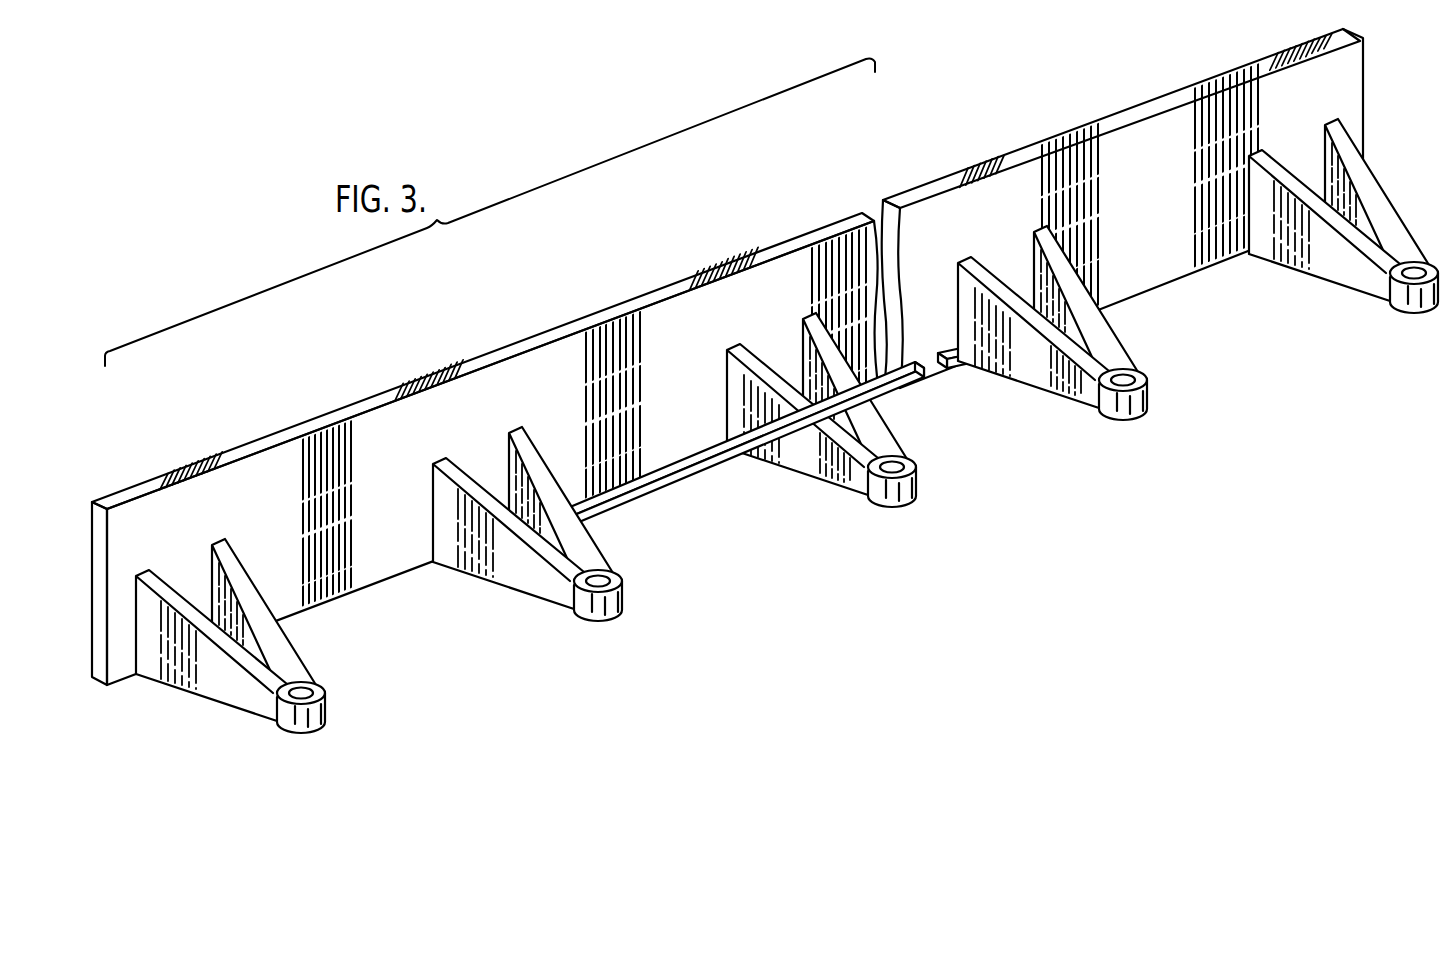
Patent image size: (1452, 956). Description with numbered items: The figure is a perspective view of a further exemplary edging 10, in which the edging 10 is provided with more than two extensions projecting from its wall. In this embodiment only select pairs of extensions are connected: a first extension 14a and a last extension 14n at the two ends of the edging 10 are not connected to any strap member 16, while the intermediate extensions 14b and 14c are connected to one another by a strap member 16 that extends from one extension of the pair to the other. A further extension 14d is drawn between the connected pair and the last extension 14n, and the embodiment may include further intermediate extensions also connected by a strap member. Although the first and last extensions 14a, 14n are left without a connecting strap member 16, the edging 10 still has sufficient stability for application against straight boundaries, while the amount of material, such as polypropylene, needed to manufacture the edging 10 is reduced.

The edging 10 is at (1053, 500).
The first extension 14a is at (235, 695).
The intermediate extension 14b is at (513, 578).
The intermediate extension 14c is at (903, 443).
The bracket 14d is at (1052, 323).
The last extension 14n is at (1327, 272).
The strap member 16 is at (683, 466).